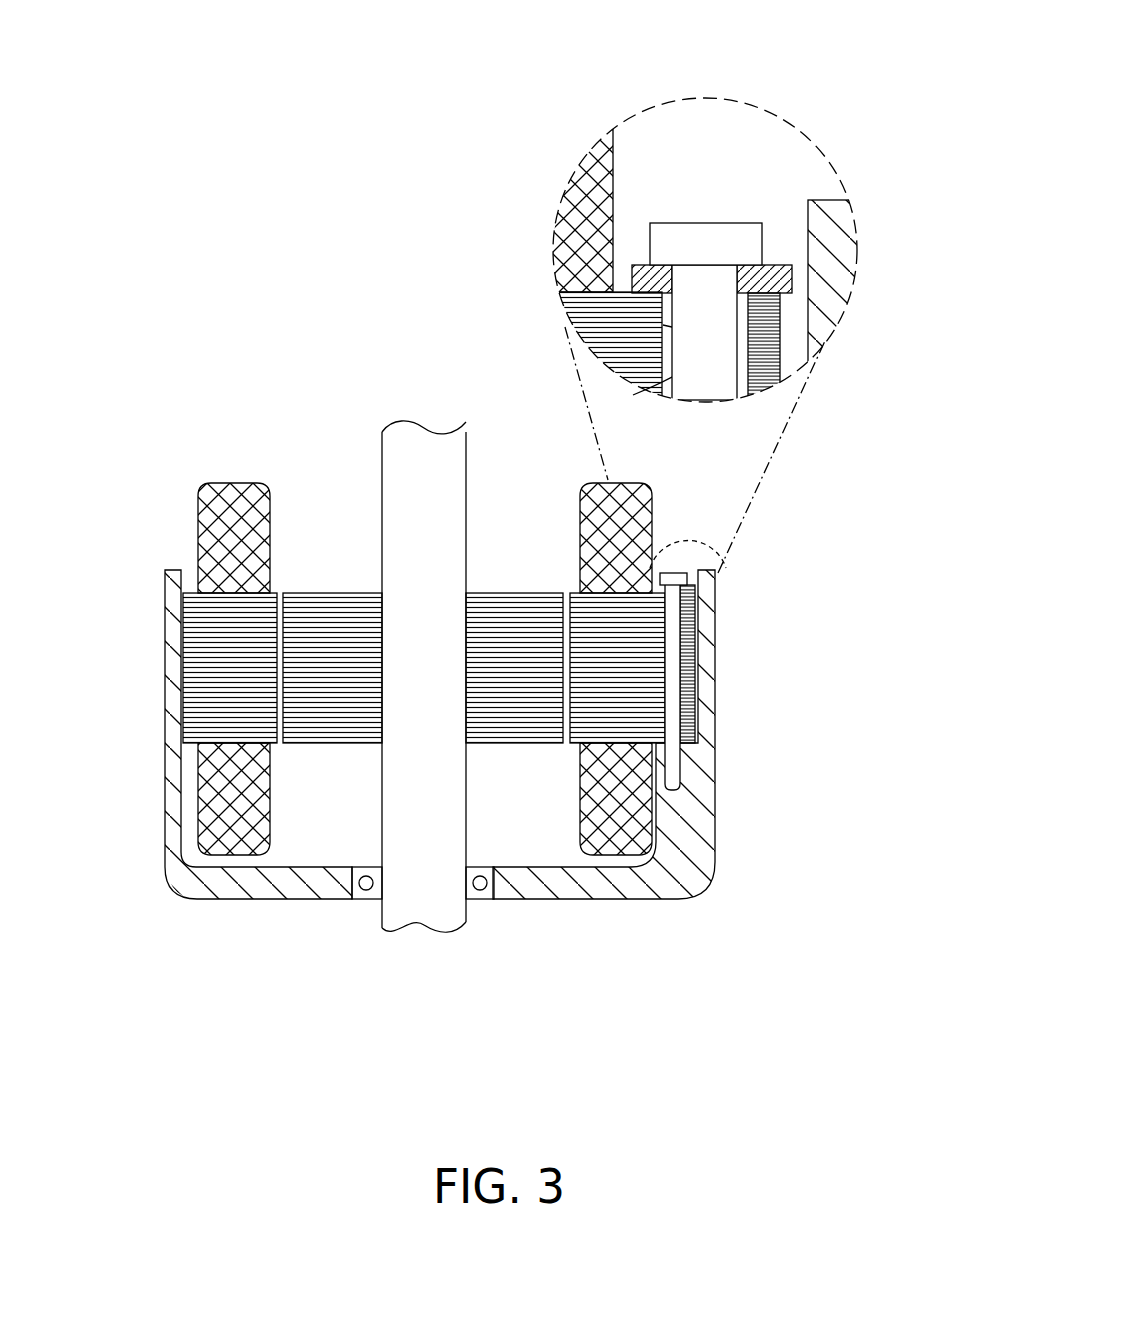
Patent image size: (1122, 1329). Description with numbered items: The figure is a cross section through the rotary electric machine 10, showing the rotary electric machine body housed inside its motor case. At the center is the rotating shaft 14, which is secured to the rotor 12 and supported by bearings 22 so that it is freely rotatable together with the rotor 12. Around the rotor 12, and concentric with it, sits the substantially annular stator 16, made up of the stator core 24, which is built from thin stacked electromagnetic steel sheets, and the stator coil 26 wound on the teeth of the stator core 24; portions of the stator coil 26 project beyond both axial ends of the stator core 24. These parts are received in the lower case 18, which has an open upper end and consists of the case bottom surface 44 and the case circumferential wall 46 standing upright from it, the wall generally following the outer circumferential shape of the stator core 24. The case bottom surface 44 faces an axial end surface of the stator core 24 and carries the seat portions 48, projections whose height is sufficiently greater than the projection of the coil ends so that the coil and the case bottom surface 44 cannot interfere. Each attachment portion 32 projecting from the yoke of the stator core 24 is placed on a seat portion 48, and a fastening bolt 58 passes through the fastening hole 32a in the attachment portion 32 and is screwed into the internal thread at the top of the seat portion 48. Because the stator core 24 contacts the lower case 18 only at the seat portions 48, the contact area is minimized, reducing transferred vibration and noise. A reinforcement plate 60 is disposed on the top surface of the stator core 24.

The rotary electric machine 10 is at (325, 220).
The rotor 12 is at (313, 593).
The rotating shaft 14 is at (413, 468).
The stator 16 is at (361, 597).
The lower case 18 is at (426, 796).
The bearings 22 is at (478, 896).
The stator core 24 is at (197, 683).
The stator coil 26 is at (198, 528).
The attachment portion 32 is at (767, 357).
The fastening hole 32a is at (662, 400).
The case bottom surface 44 is at (283, 888).
The case circumferential wall 46 is at (715, 687).
The seat portion 48 is at (698, 725).
The fastening bolt 58 is at (715, 237).
The reinforcement plate 60 is at (762, 283).